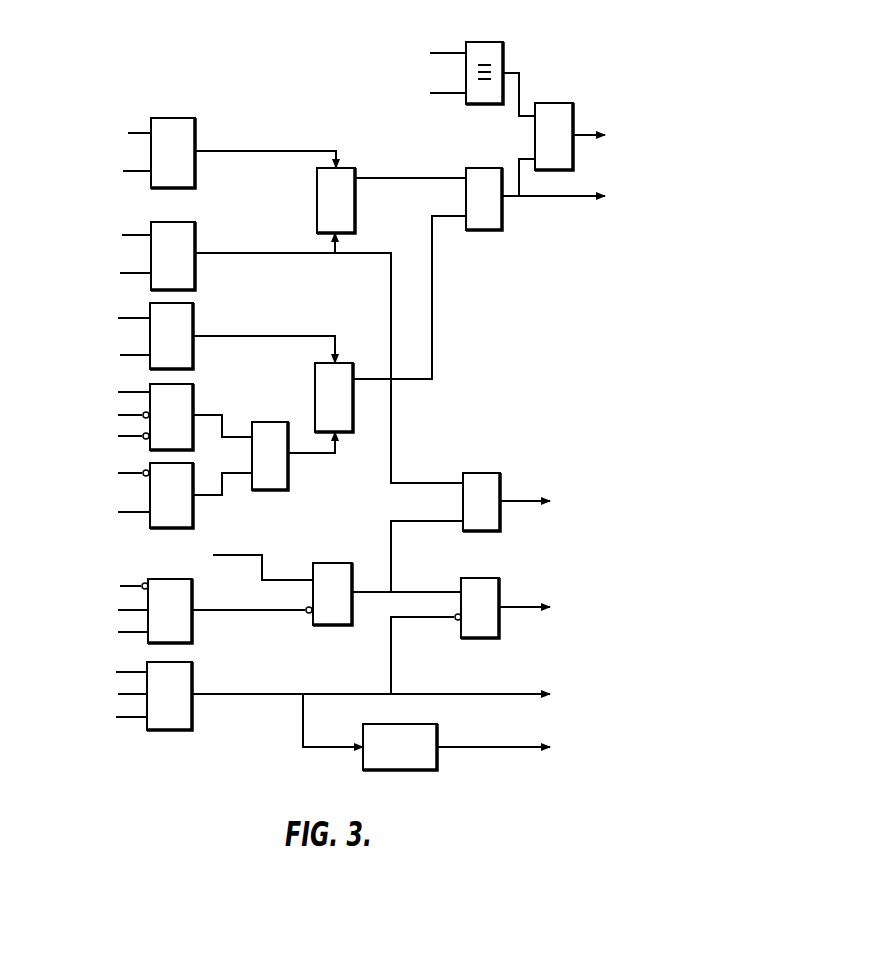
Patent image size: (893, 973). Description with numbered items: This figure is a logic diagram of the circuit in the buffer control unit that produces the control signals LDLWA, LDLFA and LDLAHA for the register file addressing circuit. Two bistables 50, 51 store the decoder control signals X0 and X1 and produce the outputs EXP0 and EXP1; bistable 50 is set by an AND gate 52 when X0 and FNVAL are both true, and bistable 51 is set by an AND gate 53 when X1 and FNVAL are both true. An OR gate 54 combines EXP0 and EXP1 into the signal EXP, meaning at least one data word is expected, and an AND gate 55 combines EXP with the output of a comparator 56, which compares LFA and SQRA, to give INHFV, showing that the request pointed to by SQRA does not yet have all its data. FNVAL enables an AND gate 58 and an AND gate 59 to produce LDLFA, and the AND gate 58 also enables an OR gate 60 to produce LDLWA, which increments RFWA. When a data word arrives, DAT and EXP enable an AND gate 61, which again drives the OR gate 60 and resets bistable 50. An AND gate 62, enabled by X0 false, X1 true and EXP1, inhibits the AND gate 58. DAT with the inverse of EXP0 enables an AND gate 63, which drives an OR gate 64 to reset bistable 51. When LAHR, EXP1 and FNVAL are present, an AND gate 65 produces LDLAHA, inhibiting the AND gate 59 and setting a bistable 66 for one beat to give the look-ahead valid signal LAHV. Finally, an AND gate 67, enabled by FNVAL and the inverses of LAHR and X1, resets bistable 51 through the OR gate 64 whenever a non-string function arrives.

The bistable 50 is at (317, 208).
The bistable 51 is at (315, 398).
The AND gate 52 is at (186, 127).
The AND gate 53 is at (190, 320).
The OR gate 54 is at (490, 228).
The AND gate 55 is at (555, 107).
The comparator 56 is at (492, 42).
The AND gate 58 is at (327, 566).
The AND gate 59 is at (491, 586).
The OR gate 60 is at (488, 487).
The AND gate 61 is at (190, 236).
The AND gate 62 is at (186, 593).
The AND gate 63 is at (190, 513).
The OR gate 64 is at (284, 480).
The AND gate 65 is at (188, 686).
The bistable 66 is at (437, 736).
The AND gate 67 is at (188, 399).